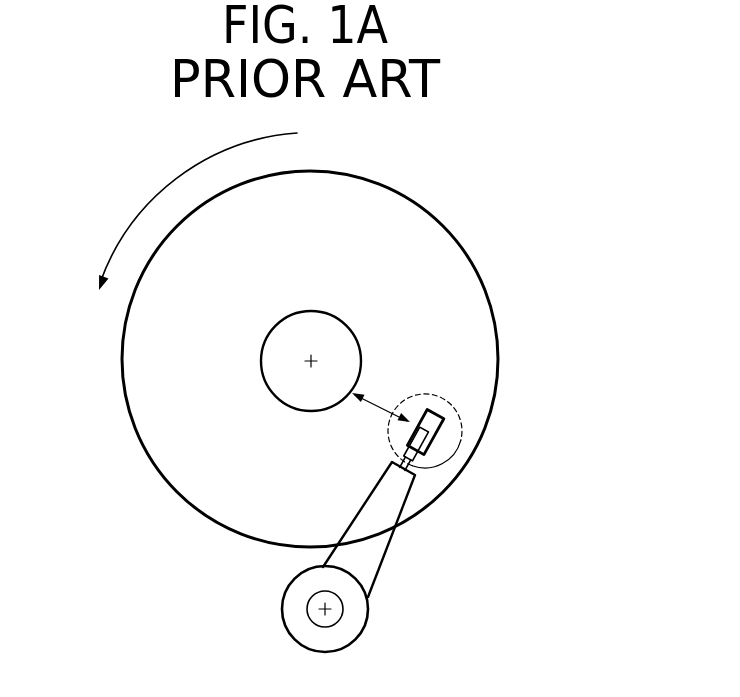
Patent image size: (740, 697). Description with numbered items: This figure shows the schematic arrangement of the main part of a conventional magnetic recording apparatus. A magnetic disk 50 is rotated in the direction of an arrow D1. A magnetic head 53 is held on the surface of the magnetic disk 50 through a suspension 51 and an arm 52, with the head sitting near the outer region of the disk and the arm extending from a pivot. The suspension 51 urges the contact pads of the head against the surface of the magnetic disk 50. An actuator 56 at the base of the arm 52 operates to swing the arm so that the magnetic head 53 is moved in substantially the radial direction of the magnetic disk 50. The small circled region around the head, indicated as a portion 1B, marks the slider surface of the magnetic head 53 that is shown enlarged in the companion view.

The arrow indicating rotation direction D1 is at (168, 182).
The magnetic disk 50 is at (500, 379).
The portion 1B is at (472, 414).
The magnetic head 53 is at (444, 420).
The suspension 51 is at (421, 465).
The arm 52 is at (385, 552).
The actuator 56 is at (358, 622).